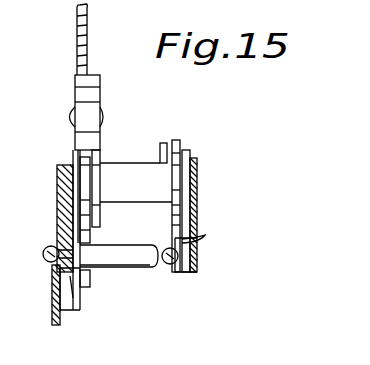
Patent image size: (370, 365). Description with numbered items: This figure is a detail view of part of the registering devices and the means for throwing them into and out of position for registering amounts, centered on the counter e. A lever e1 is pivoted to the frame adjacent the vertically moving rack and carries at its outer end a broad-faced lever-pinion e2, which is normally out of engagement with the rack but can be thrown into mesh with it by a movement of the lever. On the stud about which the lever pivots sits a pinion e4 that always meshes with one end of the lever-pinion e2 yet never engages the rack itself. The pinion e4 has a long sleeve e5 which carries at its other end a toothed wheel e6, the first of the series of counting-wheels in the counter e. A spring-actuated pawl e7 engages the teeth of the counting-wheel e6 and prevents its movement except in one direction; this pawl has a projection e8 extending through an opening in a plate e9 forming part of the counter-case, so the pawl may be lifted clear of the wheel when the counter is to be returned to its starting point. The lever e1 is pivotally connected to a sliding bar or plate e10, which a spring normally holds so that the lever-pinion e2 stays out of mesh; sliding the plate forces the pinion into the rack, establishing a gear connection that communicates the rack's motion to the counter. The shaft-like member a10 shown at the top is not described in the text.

The shaft a10 is at (78, 20).
The lever-pinion e2 is at (78, 90).
The lever e1 is at (73, 148).
The sliding bar or plate e10 is at (55, 300).
The pinion e4 is at (95, 172).
The long sleeve or lug e5 is at (136, 182).
The spring-actuated pawl e7 is at (173, 230).
The toothed wheel e6 is at (176, 146).
The counter e is at (202, 211).
The plate e9 is at (198, 203).
The projection e8 is at (206, 242).